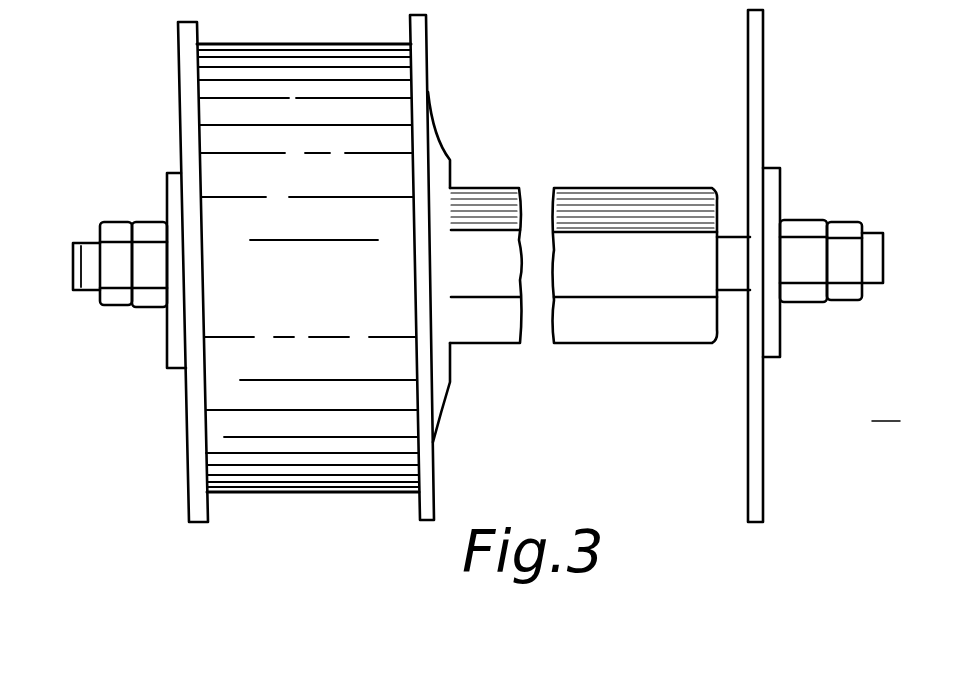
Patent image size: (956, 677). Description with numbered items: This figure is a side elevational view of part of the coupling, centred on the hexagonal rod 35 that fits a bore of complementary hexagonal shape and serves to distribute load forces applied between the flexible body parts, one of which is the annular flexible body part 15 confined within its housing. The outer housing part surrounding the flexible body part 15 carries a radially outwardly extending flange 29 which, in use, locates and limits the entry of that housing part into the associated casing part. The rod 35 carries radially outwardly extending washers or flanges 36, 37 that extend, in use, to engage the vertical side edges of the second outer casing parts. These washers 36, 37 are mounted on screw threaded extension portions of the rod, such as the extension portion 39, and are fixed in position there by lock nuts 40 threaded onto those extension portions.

The flexible body part 15 is at (443, 142).
The flange 29 is at (428, 32).
The rod 35 is at (628, 190).
The washer 36 is at (757, 197).
The washer 37 is at (193, 437).
The screw threaded extension portion 39 is at (88, 291).
The lock nut 40 is at (150, 277).